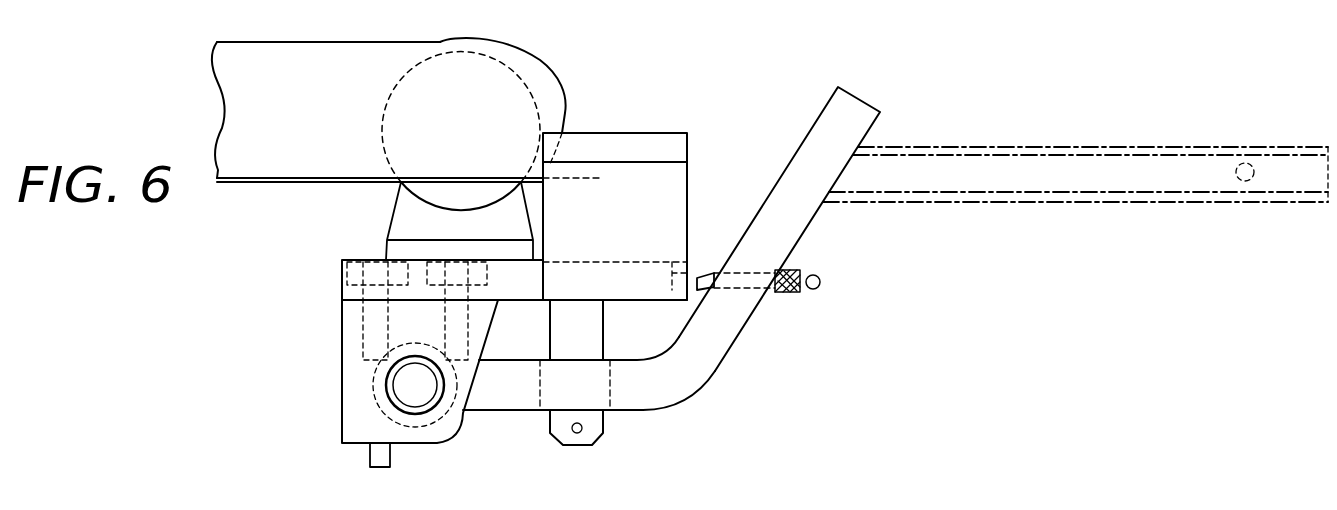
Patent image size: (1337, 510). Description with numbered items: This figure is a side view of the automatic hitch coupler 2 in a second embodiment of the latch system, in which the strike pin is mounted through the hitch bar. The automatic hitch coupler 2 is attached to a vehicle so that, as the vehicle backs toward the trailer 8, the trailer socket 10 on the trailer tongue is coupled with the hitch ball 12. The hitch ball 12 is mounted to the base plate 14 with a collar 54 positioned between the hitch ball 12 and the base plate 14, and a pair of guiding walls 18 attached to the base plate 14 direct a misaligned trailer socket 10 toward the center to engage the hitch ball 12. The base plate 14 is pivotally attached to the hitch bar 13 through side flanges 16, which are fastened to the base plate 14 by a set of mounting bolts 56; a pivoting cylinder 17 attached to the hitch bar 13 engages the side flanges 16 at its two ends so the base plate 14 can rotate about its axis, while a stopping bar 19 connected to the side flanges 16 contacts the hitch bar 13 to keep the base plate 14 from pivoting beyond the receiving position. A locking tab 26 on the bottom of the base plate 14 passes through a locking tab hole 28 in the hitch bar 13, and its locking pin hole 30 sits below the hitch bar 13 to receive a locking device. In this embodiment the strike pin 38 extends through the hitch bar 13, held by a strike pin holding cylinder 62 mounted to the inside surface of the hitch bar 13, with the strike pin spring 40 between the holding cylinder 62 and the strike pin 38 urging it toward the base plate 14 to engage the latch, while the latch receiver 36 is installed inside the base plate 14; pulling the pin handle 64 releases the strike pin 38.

The automatic hitch coupler 2 is at (962, 80).
The trailer 8 is at (272, 114).
The trailer socket 10 is at (522, 60).
The hitch ball 12 is at (443, 128).
The hitch bar 13 is at (791, 203).
The base plate 14 is at (501, 294).
The side flanges 16 is at (348, 423).
The pivoting cylinder 17 is at (428, 403).
The guiding walls 18 is at (600, 226).
The stopping bar 19 is at (370, 456).
The locking tab 26 is at (568, 346).
The locking tab hole 28 is at (561, 394).
The locking pin hole 30 is at (577, 436).
The latch receiver 36 is at (677, 282).
The strike pin 38 is at (703, 280).
The strike pin spring 40 is at (785, 292).
The collar 54 is at (406, 234).
The mounting bolts 56 is at (455, 325).
The strike pin holding cylinder 62 is at (790, 273).
The pin handle 64 is at (818, 275).